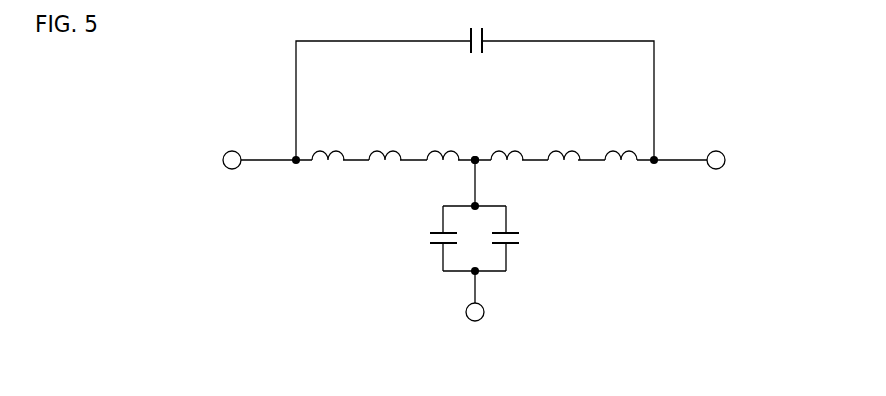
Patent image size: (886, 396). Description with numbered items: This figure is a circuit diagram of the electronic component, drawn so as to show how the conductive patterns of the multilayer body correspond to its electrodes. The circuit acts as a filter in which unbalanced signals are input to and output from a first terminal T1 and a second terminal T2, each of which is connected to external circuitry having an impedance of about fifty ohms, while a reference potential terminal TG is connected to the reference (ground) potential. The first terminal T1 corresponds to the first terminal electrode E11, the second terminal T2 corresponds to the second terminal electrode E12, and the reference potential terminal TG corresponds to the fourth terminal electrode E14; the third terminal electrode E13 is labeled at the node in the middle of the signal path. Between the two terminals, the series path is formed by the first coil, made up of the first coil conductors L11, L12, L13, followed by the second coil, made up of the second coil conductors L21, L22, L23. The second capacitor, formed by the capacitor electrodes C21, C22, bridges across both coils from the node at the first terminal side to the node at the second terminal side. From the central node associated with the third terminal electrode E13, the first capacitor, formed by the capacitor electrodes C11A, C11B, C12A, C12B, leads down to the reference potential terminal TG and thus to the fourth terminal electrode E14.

The first terminal T1 is at (207, 176).
The second terminal T2 is at (740, 176).
The reference potential terminal TG is at (475, 343).
The first terminal electrode E11 is at (207, 178).
The second terminal electrode E12 is at (740, 178).
The third terminal electrode E13 is at (475, 156).
The fourth terminal electrode E14 is at (475, 343).
The capacitor electrode C21 is at (440, 31).
The capacitor electrode C22 is at (510, 31).
The capacitor electrode C11A is at (412, 219).
The capacitor electrode C11B is at (537, 219).
The capacitor electrode C12A is at (412, 259).
The capacitor electrode C12B is at (537, 259).
The first coil conductor L11 is at (327, 139).
The first coil conductor L12 is at (384, 139).
The first coil conductor L13 is at (441, 139).
The second coil conductor L21 is at (620, 139).
The second coil conductor L22 is at (564, 139).
The second coil conductor L23 is at (507, 139).